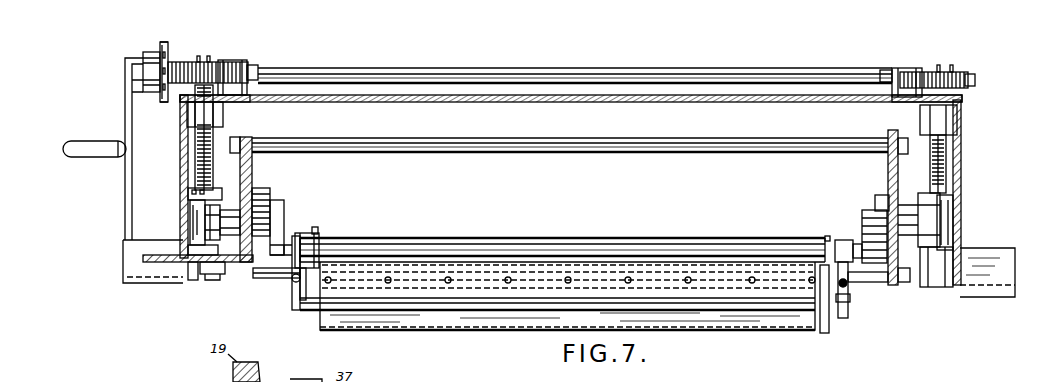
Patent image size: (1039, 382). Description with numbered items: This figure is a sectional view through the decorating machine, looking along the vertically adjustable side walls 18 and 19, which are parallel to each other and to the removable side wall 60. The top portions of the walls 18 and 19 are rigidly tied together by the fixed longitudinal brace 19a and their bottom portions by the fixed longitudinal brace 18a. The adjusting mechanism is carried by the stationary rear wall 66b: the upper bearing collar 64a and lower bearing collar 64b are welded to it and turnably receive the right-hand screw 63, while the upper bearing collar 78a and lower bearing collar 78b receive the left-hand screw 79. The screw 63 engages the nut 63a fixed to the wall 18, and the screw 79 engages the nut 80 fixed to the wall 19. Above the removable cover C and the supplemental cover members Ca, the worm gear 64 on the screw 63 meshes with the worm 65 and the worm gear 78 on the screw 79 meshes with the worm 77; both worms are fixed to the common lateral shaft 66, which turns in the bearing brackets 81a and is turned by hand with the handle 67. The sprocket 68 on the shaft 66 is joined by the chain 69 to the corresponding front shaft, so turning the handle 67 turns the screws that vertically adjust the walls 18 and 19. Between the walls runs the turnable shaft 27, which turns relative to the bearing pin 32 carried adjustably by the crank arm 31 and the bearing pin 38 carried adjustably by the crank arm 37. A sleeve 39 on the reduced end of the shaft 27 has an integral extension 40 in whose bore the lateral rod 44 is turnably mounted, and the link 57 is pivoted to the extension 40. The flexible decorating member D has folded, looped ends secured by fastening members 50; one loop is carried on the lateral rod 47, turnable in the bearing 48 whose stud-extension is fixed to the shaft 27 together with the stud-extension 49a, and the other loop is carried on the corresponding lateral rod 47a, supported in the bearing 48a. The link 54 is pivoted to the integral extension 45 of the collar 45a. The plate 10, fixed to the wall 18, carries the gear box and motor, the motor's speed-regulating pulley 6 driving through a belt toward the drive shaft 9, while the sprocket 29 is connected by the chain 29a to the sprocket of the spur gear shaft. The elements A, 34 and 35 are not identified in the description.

The handle 67 is at (125, 101).
The sprocket 68 is at (164, 42).
The chain 69 is at (168, 57).
The worm 65 is at (206, 62).
The bearing brackets 81a is at (234, 60).
The worm gear 64 is at (255, 65).
The lateral shaft 66 is at (462, 68).
The removable cover C is at (478, 99).
The supplemental cover members Ca is at (250, 98).
The stationary rear wall 66b is at (584, 122).
The longitudinal bar or brace 19a is at (503, 150).
The screw 63 is at (195, 139).
The upper bearing collar 64a is at (223, 113).
The removable side wall 60 is at (178, 157).
The nut 63a is at (190, 192).
The chain 29a is at (190, 206).
The sprocket 29 is at (205, 216).
The pulley 6 is at (228, 196).
The vertically adjustable side wall 18 is at (252, 158).
The crank arm 31 is at (270, 205).
The bearing pin 32 is at (284, 225).
The collar 45a is at (305, 233).
The stud-extension 49a is at (318, 230).
The base A is at (128, 240).
The plate 10 is at (150, 253).
The lower bearing collar 64b is at (200, 268).
The longitudinal bar or brace 18a is at (262, 275).
The turnable shaft 27 is at (740, 240).
The lateral rod 47 is at (400, 268).
The lateral rod or bar 47a is at (520, 265).
The rivet or fastening member 50 is at (508, 278).
The lateral rod 44 is at (426, 308).
The decorating member D is at (541, 331).
The integral extension 45 is at (292, 292).
The link 54 is at (291, 280).
The bearing 48a is at (302, 297).
The bearing 48 is at (824, 305).
The extension 40 is at (848, 313).
The link 57 is at (852, 300).
The sleeve 39 is at (845, 240).
The vertically adjustable side wall 19 is at (888, 168).
The bearing pin 38 is at (862, 232).
The crank arm 37 is at (875, 200).
The upper bearing collar 78a is at (920, 118).
The screw 79 is at (946, 162).
The nut 80 is at (961, 180).
The slide 34 is at (953, 233).
The bracket 35 is at (945, 216).
The lower bearing collar 78b is at (930, 288).
The worm 77 is at (946, 72).
The worm gear 78 is at (975, 79).
The drive shaft 9 is at (470, 381).